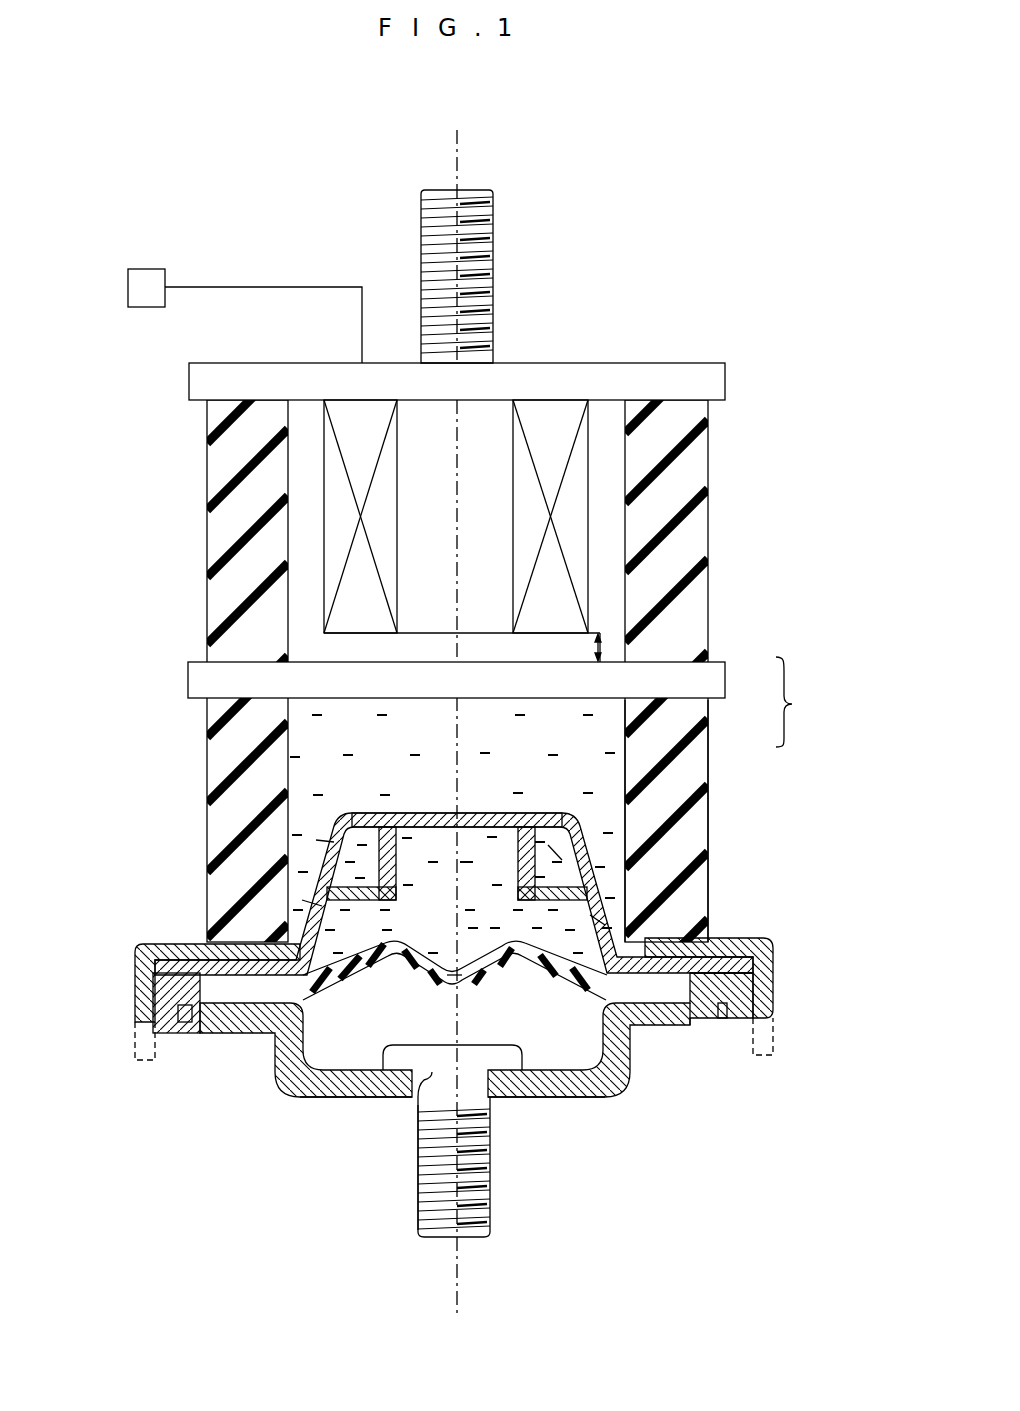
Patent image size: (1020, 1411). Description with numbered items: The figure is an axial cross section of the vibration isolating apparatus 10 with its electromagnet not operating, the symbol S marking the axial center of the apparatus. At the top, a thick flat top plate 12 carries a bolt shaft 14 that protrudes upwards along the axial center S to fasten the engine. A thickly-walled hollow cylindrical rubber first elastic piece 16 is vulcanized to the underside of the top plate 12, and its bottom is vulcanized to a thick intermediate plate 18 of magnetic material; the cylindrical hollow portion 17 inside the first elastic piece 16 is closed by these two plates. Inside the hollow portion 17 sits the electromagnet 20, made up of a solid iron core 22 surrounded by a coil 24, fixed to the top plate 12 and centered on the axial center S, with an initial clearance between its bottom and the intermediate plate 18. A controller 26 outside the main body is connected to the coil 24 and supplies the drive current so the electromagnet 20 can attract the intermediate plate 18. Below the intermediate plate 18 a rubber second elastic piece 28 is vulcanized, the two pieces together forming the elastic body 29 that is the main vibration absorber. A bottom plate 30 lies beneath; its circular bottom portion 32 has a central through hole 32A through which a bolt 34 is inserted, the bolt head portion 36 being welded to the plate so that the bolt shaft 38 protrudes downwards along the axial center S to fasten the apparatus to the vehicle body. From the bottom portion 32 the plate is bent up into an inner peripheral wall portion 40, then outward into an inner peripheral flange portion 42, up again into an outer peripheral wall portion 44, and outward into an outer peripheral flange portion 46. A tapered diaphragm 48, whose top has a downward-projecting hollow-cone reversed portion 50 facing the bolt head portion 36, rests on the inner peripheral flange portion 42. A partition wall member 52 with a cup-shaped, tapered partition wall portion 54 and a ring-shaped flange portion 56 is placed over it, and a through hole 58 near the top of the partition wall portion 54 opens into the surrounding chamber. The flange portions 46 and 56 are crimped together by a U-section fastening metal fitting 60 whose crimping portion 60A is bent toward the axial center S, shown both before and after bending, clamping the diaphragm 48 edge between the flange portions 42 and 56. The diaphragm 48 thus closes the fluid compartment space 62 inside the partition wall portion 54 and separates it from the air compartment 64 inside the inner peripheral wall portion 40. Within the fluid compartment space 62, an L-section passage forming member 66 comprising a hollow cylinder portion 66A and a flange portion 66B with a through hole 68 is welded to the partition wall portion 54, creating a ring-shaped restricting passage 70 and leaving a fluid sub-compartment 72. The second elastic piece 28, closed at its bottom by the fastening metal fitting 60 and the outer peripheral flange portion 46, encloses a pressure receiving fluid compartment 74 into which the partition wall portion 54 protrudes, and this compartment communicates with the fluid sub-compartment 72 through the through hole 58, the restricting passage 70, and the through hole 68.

The vibration isolating apparatus 10 is at (612, 293).
The top plate 12 is at (725, 380).
The bolt shaft 14 is at (421, 256).
The first elastic piece 16 is at (708, 470).
The hollow portion 17 is at (308, 485).
The intermediate plate 18 is at (189, 680).
The electromagnet 20 is at (323, 643).
The core 22 is at (490, 410).
The coil 24 is at (582, 530).
The controller 26 is at (147, 269).
The second elastic piece 28 is at (708, 744).
The elastic body 29 is at (797, 702).
The bottom plate 30 is at (293, 1095).
The bottom portion 32 is at (533, 1092).
The through hole 32A is at (417, 1115).
The bolt 34 is at (410, 1212).
The bolt head portion 36 is at (480, 1051).
The bolt shaft 38 is at (487, 1172).
The inner peripheral wall portion 40 is at (285, 1053).
The inner peripheral flange portion 42 is at (663, 1017).
The outer peripheral wall portion 44 is at (703, 1007).
The outer peripheral flange portion 46 is at (160, 985).
The diaphragm 48 is at (320, 995).
The reversed portion 50 is at (470, 980).
The partition wall member 52 is at (583, 822).
The partition wall portion 54 is at (320, 905).
The flange portion 56 is at (735, 962).
The through hole 58 is at (335, 850).
The fastening metal fitting 60 is at (138, 944).
The crimping portion 60A is at (172, 1027).
The fluid compartment space 62 is at (443, 938).
The air compartment 64 is at (590, 1092).
The passage forming member 66 is at (400, 863).
The hollow cylinder portion 66A is at (487, 826).
The flange portion 66B is at (365, 900).
The through hole 68 is at (573, 923).
The restricting passage 70 is at (550, 852).
The fluid sub-compartment 72 is at (333, 918).
The pressure receiving fluid compartment 74 is at (333, 762).
The axial center S is at (462, 185).